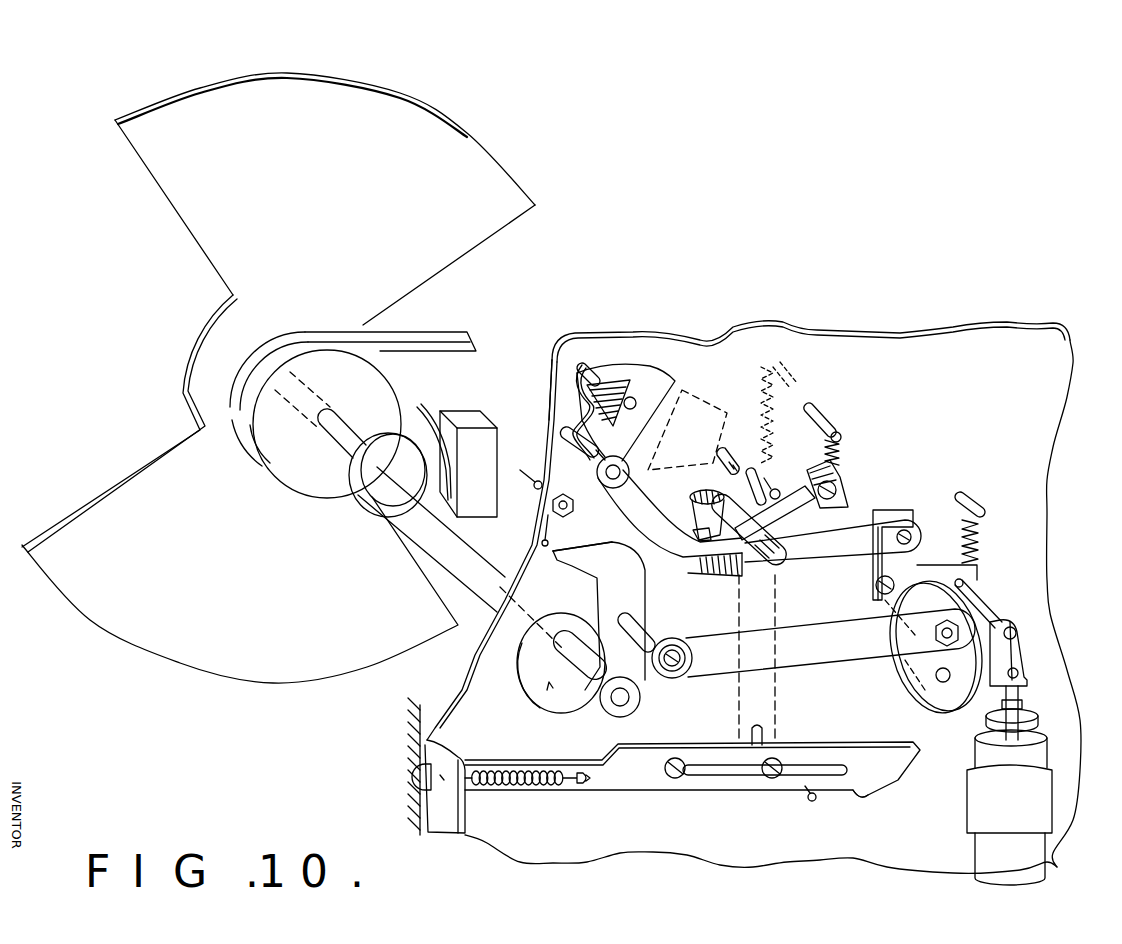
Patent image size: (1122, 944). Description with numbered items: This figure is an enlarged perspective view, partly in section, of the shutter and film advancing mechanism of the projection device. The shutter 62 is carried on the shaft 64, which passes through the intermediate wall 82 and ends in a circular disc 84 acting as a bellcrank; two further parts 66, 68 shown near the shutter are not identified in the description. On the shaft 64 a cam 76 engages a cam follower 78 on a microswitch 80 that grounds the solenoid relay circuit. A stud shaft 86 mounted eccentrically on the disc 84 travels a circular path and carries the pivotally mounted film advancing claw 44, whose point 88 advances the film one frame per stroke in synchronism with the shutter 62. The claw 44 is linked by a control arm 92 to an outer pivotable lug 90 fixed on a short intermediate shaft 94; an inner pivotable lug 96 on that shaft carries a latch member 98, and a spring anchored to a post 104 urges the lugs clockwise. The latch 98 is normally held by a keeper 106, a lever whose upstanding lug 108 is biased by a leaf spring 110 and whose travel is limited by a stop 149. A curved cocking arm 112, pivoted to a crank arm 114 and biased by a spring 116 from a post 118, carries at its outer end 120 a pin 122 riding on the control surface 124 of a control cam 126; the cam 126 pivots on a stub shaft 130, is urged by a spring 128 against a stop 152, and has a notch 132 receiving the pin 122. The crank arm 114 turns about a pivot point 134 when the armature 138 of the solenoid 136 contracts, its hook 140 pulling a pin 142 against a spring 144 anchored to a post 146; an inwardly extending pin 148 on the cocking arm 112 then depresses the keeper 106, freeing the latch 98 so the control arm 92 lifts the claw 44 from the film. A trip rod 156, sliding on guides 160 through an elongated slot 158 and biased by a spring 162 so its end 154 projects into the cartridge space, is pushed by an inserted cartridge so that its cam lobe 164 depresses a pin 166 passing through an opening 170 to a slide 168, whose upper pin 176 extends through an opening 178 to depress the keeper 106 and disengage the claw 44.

The film advancing claw 44 is at (640, 602).
The shutter 62 is at (470, 142).
The shaft 64 is at (447, 546).
The hub 66 is at (287, 460).
The strap arm 68 is at (440, 333).
The cam 76 is at (382, 452).
The cam follower 78 is at (424, 407).
The microswitch 80 is at (471, 418).
The intermediate wall 82 is at (878, 338).
The circular disc 84 is at (541, 695).
The stud shaft 86 is at (575, 645).
The point 88 is at (566, 545).
The outer pivotable lug 90 is at (912, 685).
The control arm 92 is at (798, 657).
The intermediate shaft 94 is at (729, 455).
The inner pivotable lug 96 is at (682, 394).
The latch member 98 is at (773, 560).
The post 104 is at (546, 475).
The keeper 106 is at (840, 476).
The upstanding lug 108 is at (690, 503).
The leaf spring 110 is at (842, 492).
The curved cocking arm 112 is at (703, 575).
The crank arm 114 is at (908, 566).
The spring 116 is at (840, 445).
The post 118 is at (818, 421).
The outer end 120 is at (603, 489).
The pin 122 is at (560, 440).
The control surface 124 is at (560, 408).
The control cam 126 is at (621, 385).
The spring 128 is at (543, 505).
The stub shaft 130 is at (634, 398).
The notch 132 is at (560, 376).
The pivot point 134 is at (876, 594).
The solenoid 136 is at (973, 755).
The armature 138 is at (1040, 730).
The hook 140 is at (1012, 620).
The pin 142 is at (1018, 634).
The spring 144 is at (980, 544).
The post 146 is at (968, 500).
The pin 148 is at (786, 530).
The stop 149 is at (700, 527).
The stop 152 is at (595, 362).
The end 154 is at (410, 784).
The trip rod 156 is at (636, 790).
The elongated slot 158 is at (713, 777).
The guides 160 is at (676, 779).
The spring 162 is at (518, 785).
The cam lobe 164 is at (866, 798).
The pin 166 is at (812, 802).
The slide 168 is at (737, 700).
The opening 170 is at (764, 727).
The upper pin 176 is at (766, 495).
The opening 178 is at (770, 477).